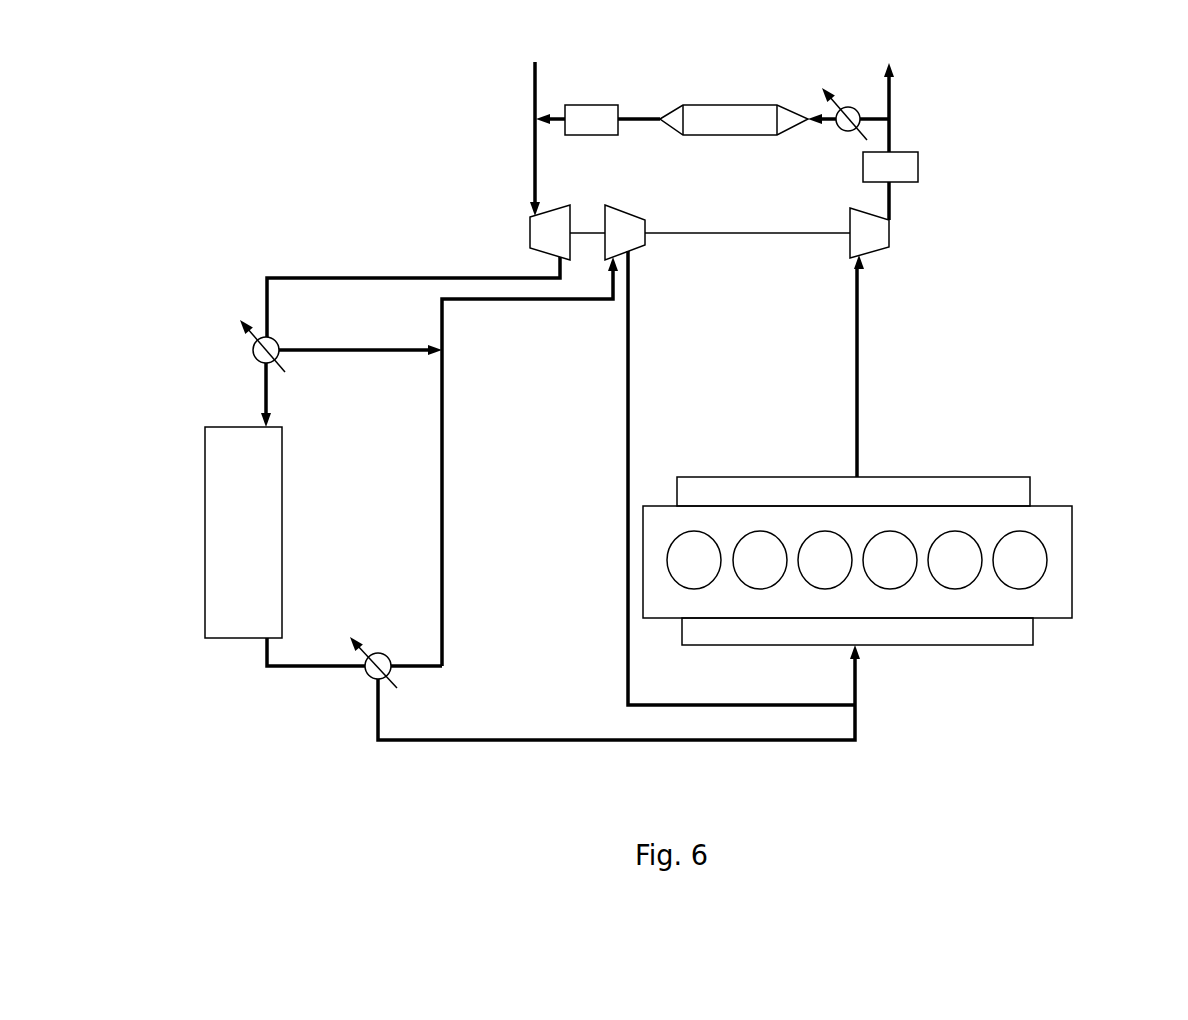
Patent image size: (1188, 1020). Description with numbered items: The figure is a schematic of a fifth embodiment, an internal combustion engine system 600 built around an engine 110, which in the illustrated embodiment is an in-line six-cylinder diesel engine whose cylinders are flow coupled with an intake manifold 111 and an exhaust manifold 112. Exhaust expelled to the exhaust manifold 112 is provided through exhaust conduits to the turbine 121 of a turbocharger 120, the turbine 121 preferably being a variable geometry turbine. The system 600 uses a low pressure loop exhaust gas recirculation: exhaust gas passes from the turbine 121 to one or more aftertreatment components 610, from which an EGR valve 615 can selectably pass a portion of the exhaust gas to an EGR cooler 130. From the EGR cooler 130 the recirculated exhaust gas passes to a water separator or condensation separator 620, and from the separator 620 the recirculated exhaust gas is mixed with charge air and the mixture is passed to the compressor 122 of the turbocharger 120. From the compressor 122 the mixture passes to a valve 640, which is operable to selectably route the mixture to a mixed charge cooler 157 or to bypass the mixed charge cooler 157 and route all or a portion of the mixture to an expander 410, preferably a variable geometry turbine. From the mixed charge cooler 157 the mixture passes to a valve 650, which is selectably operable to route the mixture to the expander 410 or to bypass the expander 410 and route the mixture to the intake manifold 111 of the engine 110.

The internal combustion engine system 600 is at (298, 134).
The engine 110 is at (1057, 558).
The intake manifold 111 is at (1018, 630).
The exhaust manifold 112 is at (1013, 490).
The turbocharger 120 is at (719, 261).
The turbine 121 is at (878, 237).
The compressor 122 is at (525, 227).
The expander 410 is at (628, 232).
The EGR cooler 130 is at (730, 120).
The mixed charge cooler 157 is at (262, 497).
The aftertreatment components 610 is at (907, 170).
The EGR valve 615 is at (848, 105).
The water separator or condensation separator 620 is at (590, 120).
The valve 640 is at (258, 365).
The valve 650 is at (368, 683).